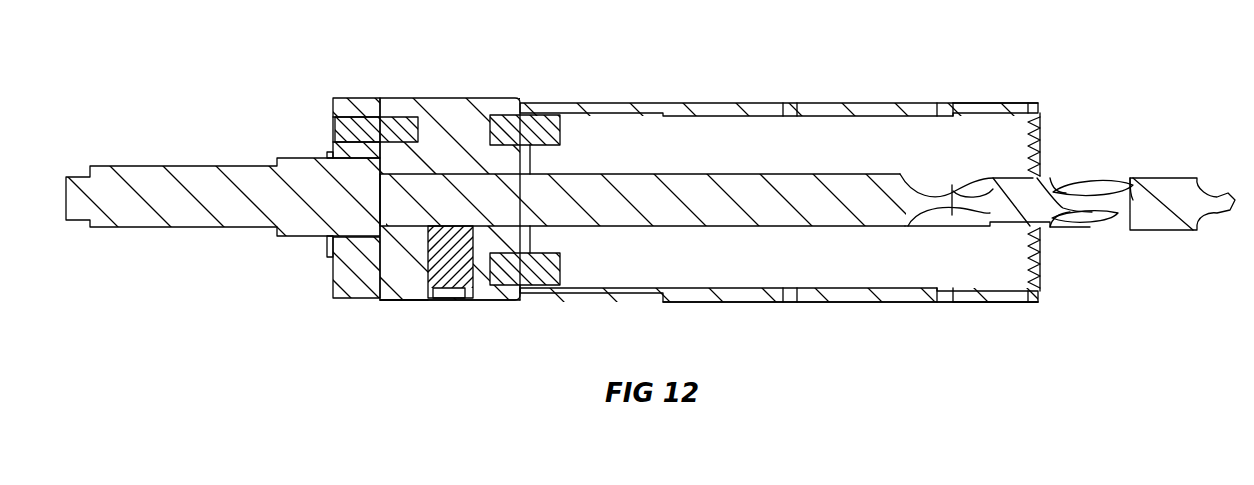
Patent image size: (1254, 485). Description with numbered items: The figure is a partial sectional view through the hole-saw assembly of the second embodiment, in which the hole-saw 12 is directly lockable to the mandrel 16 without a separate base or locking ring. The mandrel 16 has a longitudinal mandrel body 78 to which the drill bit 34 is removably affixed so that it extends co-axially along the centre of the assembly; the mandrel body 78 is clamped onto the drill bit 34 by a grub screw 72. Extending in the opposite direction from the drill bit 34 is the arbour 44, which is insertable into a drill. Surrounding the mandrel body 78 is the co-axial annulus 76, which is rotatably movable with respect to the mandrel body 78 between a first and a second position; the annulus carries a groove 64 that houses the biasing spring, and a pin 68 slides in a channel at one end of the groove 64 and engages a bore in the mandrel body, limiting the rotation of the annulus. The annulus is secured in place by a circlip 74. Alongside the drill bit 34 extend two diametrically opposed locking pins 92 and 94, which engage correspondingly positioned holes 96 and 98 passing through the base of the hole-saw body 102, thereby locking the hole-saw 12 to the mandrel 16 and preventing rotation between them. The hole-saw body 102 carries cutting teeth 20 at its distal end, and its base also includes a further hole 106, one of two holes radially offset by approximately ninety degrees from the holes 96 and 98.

The hole-saw 12 is at (834, 318).
The mandrel 16 is at (389, 343).
The cutting teeth 20 is at (1041, 283).
The drill bit 34 is at (1145, 200).
The arbour 44 is at (178, 215).
The groove 64 is at (334, 98).
The pin 68 is at (406, 120).
The grub screw 72 is at (448, 300).
The circlip 74 is at (331, 257).
The co-axial annulus 76 is at (350, 283).
The mandrel body 78 is at (395, 292).
The locking pin 92 is at (565, 116).
The locking pin 94 is at (555, 286).
The hole 96 is at (524, 104).
The hole 98 is at (523, 299).
The hole-saw body 102 is at (962, 303).
The hole 106 is at (839, 64).